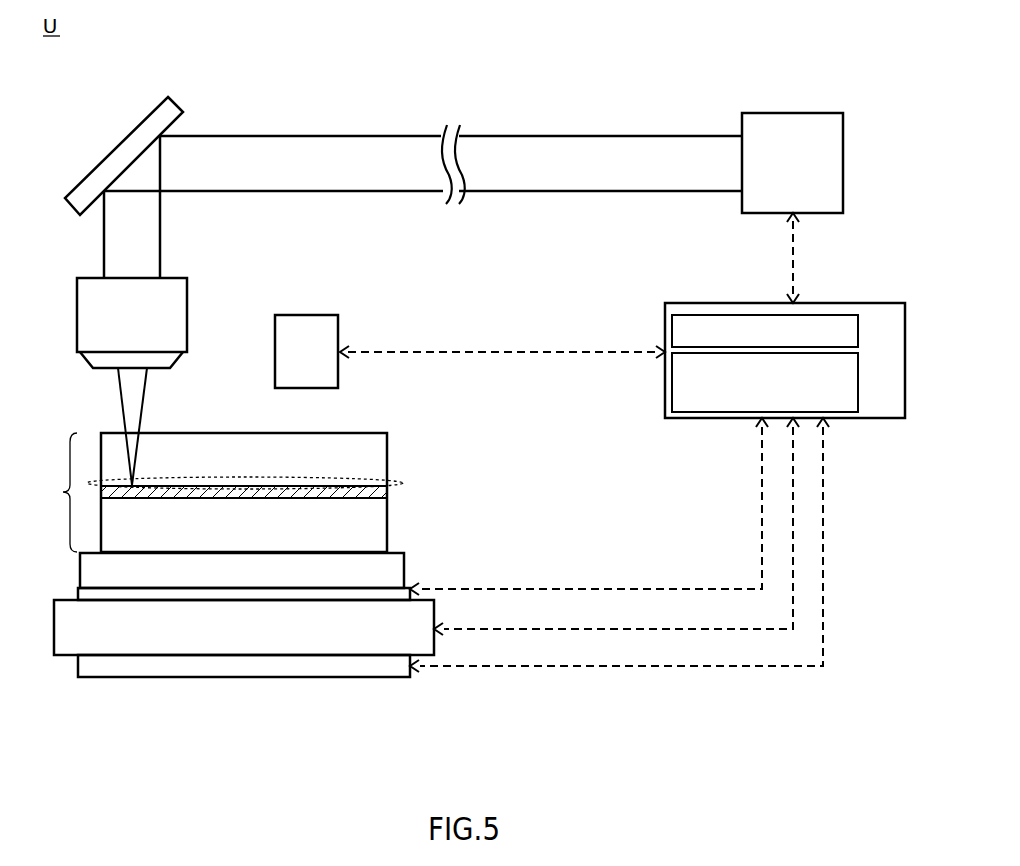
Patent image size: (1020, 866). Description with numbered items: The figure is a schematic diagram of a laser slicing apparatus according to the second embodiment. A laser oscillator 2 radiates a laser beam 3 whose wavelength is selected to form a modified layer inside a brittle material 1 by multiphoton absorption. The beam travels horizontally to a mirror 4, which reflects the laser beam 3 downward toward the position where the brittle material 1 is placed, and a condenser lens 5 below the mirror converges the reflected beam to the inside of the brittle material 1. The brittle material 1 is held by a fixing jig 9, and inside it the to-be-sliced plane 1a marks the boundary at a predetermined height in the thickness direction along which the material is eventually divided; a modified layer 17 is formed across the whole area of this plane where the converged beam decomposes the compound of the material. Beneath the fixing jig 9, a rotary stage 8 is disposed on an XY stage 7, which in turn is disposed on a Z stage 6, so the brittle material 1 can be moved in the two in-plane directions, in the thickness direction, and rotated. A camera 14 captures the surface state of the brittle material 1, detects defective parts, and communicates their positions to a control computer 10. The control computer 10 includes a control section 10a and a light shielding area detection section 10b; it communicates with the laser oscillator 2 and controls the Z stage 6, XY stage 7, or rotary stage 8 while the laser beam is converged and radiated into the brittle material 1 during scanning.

The brittle material 1 is at (214, 492).
The to-be-sliced plane 1a is at (395, 482).
The laser oscillator 2 is at (797, 113).
The laser beam 3 is at (104, 238).
The mirror 4 is at (155, 110).
The condenser lens 5 is at (77, 313).
The Z stage 6 is at (243, 678).
The XY stage 7 is at (54, 622).
The rotary stage 8 is at (78, 594).
The fixing jig 9 is at (80, 570).
The control computer 10 is at (805, 303).
The control section 10a is at (858, 333).
The light shielding area detection section 10b is at (858, 390).
The camera 14 is at (305, 315).
The modified layer 17 is at (388, 489).